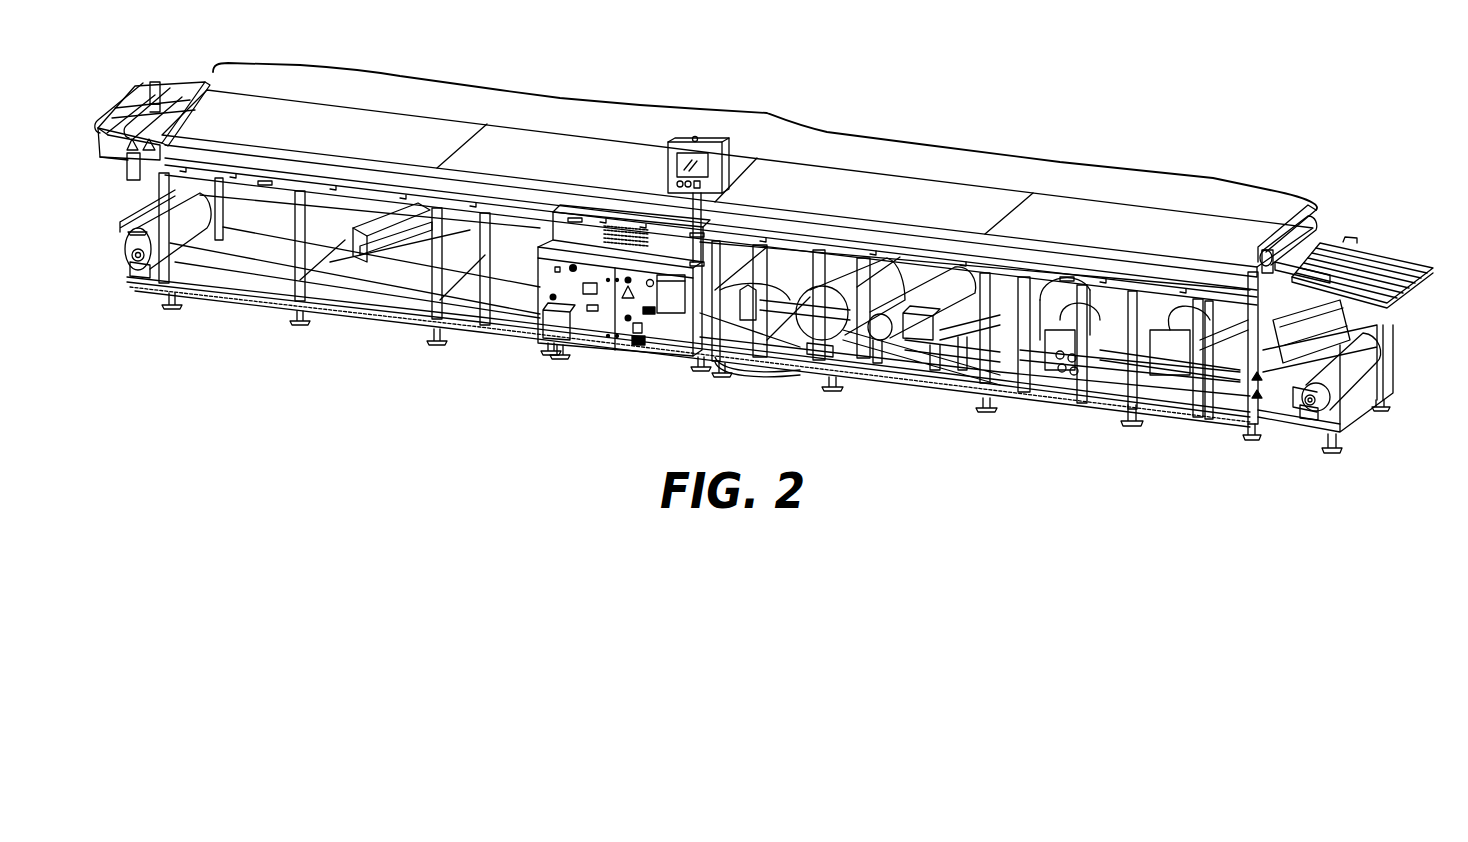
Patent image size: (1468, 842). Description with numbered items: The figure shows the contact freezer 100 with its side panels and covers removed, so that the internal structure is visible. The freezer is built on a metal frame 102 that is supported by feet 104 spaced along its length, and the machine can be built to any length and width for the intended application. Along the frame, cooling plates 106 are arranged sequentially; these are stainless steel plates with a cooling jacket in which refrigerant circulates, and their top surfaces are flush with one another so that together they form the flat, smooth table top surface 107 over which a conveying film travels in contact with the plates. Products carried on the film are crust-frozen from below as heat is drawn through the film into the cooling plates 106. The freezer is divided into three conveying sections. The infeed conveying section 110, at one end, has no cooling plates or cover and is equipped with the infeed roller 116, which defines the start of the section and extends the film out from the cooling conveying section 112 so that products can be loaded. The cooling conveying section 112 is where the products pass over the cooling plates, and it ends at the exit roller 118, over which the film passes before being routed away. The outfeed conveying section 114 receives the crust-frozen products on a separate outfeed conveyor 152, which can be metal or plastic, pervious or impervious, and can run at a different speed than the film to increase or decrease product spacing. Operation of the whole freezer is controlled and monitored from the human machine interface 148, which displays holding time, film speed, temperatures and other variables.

The contact freezer 100 is at (540, 414).
The metal frame 102 is at (382, 308).
The feet 104 is at (297, 308).
The cooling plates 106 is at (262, 160).
The table top surface 107 is at (372, 141).
The infeed conveying section 110 is at (152, 74).
The cooling conveying section 112 is at (767, 113).
The outfeed conveying section 114 is at (1386, 247).
The infeed roller 116 is at (127, 106).
The exit roller 118 is at (1323, 233).
The human machine interface 148 is at (722, 166).
The outfeed conveyor 152 is at (1410, 268).